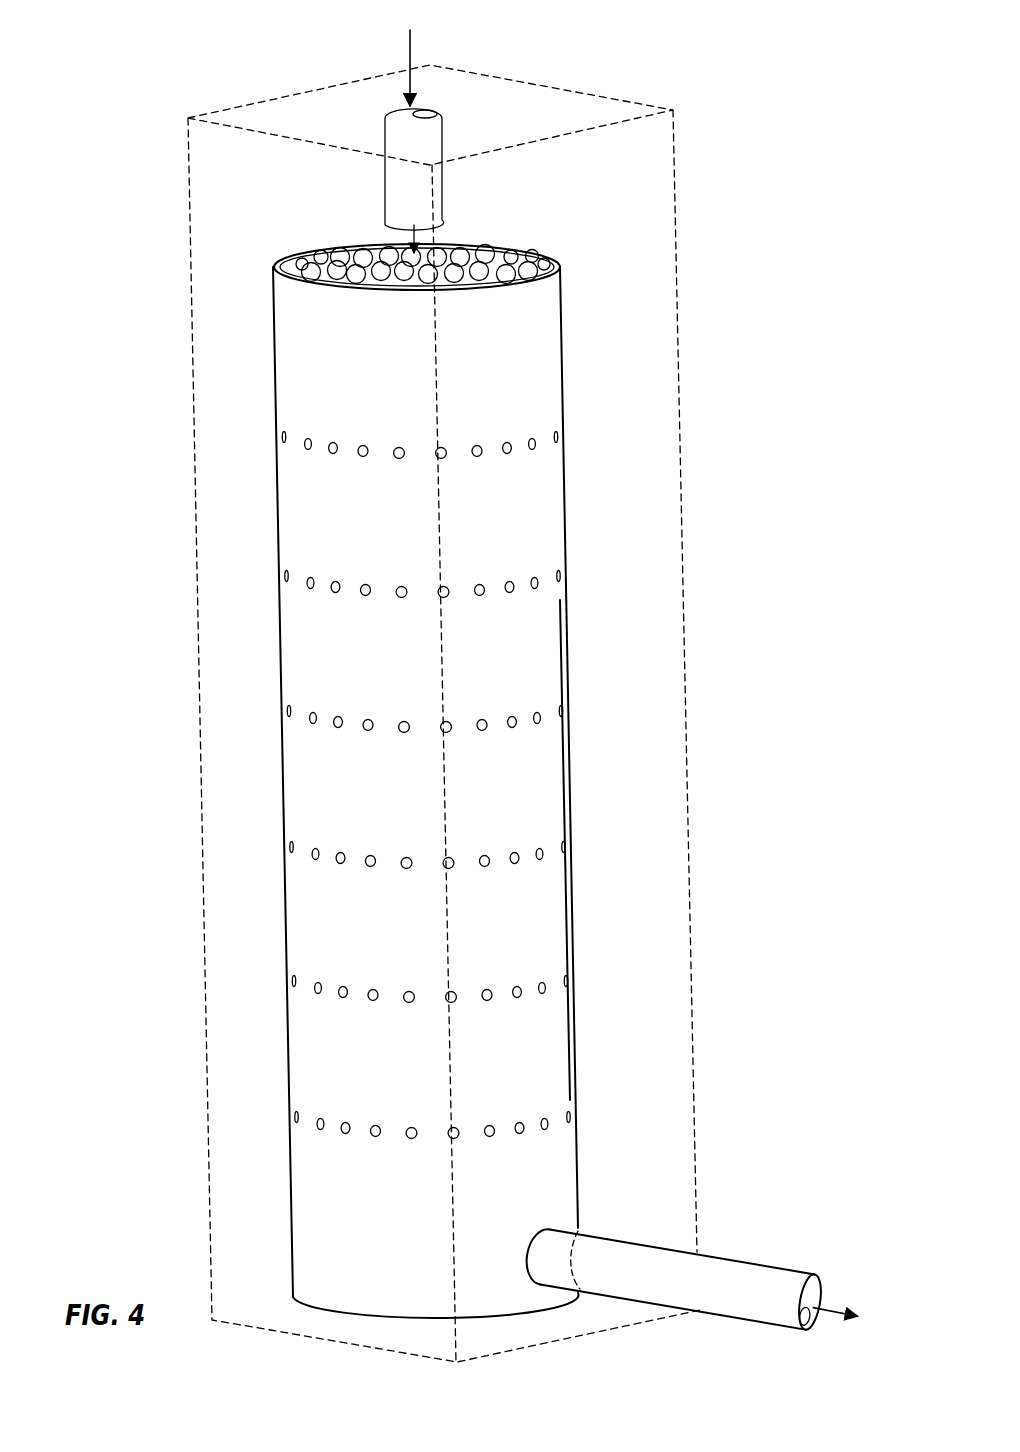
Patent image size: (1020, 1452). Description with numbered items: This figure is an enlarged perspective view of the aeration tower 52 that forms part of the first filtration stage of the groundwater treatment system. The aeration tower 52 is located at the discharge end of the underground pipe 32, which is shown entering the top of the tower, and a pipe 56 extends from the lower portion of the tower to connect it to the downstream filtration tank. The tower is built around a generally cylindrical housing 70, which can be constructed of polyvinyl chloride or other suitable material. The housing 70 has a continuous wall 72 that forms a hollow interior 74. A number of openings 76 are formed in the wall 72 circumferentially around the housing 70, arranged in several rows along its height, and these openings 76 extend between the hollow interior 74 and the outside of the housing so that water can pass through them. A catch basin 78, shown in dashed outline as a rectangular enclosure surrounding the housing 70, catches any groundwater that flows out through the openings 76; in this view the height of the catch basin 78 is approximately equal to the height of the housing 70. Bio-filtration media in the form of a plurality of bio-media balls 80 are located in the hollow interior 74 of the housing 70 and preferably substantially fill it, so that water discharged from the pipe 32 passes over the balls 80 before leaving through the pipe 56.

The underground pipe 32 is at (402, 143).
The aeration tower 52 is at (552, 246).
The pipe 56 is at (738, 1280).
The cylindrical housing 70 is at (563, 345).
The continuous wall 72 is at (545, 490).
The hollow interior 74 is at (295, 262).
The openings 76 is at (508, 591).
The catch basin 78 is at (678, 278).
The bio-media balls 80 is at (502, 250).